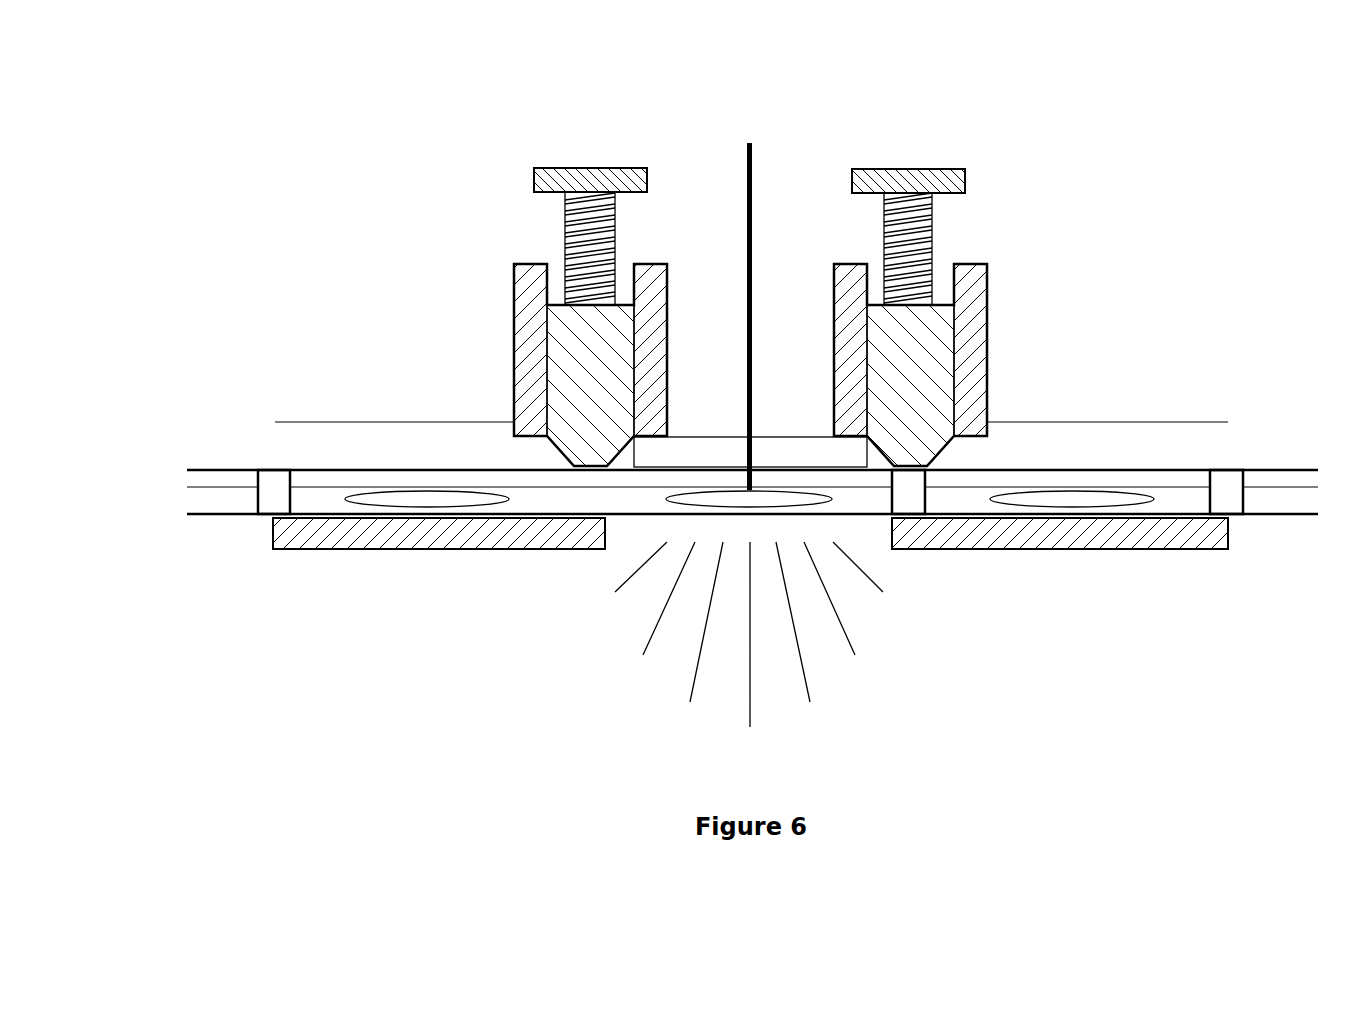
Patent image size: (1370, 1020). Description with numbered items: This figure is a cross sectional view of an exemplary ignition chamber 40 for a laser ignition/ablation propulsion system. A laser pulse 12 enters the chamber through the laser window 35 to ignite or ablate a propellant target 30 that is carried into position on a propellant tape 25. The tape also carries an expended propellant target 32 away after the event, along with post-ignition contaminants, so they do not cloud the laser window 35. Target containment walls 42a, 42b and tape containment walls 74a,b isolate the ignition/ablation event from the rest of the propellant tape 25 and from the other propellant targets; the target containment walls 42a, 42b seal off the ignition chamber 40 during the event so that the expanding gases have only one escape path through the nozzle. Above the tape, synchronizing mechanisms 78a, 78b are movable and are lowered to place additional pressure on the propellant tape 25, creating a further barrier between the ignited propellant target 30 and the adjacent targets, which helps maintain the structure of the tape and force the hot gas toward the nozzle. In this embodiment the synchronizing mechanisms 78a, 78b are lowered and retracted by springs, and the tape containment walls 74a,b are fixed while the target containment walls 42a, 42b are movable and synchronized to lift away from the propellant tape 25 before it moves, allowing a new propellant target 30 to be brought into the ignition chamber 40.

The ignition chamber 40 is at (715, 42).
The laser pulse 12 is at (752, 217).
The synchronizing mechanism 78a is at (555, 168).
The synchronizing mechanism 78b is at (944, 169).
The tape containment walls 74a,b is at (1113, 422).
The laser window 35 is at (692, 436).
The propellant tape 25 is at (1282, 500).
The target containment wall 42a is at (592, 507).
The target containment wall 42b is at (907, 507).
The expended propellant target 32 is at (1108, 504).
The propellant target 30 is at (800, 500).